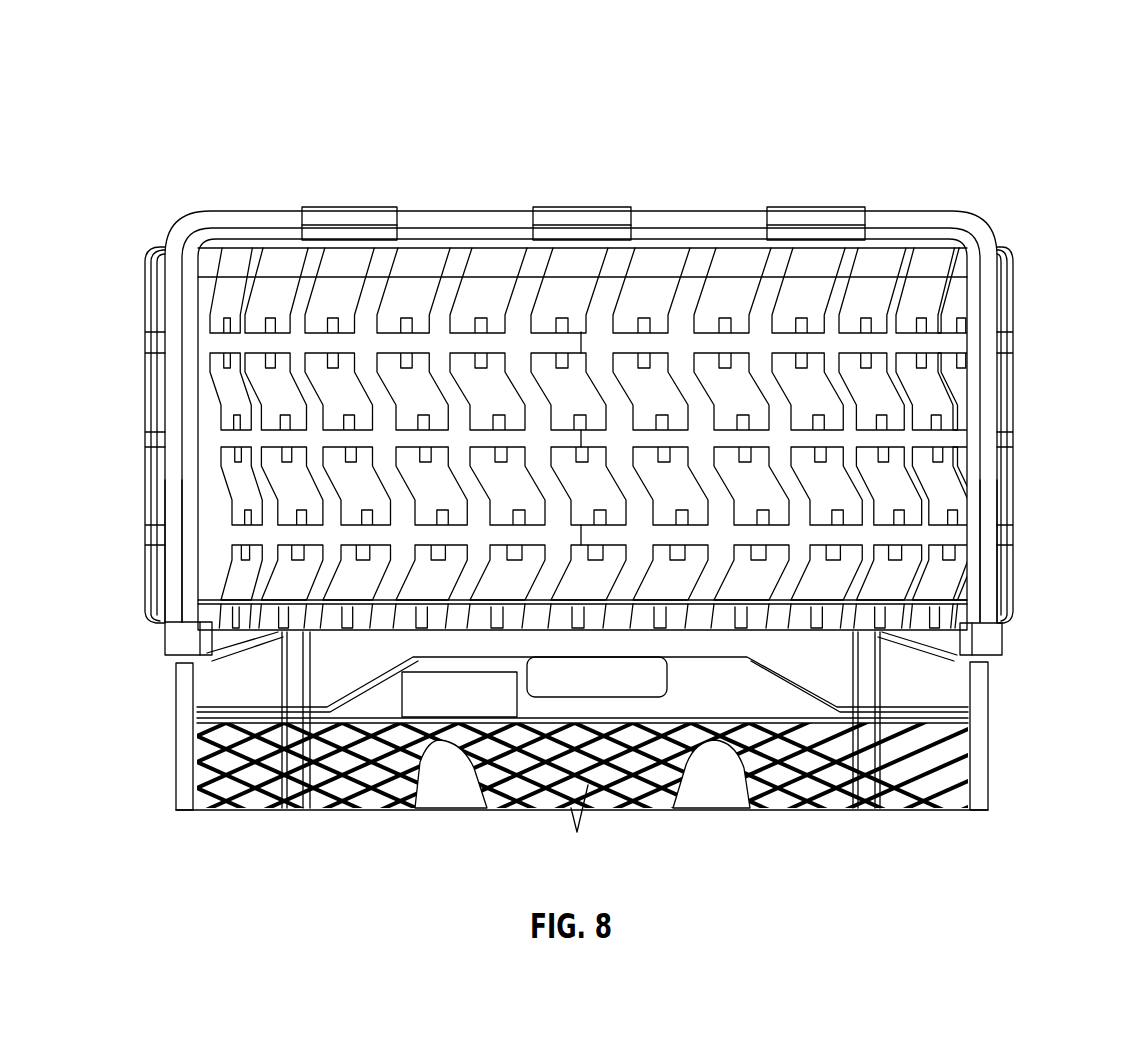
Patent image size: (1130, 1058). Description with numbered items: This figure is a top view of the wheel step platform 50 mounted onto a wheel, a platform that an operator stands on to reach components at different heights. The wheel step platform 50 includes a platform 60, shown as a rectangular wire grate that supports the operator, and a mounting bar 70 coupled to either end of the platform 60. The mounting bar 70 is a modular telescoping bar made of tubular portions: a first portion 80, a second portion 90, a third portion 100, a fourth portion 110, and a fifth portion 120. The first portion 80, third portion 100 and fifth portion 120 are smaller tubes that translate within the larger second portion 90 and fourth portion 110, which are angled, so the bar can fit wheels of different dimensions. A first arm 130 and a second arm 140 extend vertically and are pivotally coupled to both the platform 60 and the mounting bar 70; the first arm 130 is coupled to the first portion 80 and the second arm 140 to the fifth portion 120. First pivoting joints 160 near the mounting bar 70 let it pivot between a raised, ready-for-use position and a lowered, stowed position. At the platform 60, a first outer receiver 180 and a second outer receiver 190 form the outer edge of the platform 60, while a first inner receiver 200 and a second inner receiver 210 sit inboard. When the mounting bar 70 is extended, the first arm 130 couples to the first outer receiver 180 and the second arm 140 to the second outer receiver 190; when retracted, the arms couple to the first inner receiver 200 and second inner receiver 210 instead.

The wheel step platform 50 is at (1037, 92).
The platform 60 is at (278, 792).
The mounting bar 70 is at (193, 231).
The first portion 80 is at (177, 585).
The second portion 90 is at (170, 287).
The third portion 100 is at (462, 222).
The fourth portion 110 is at (957, 222).
The fifth portion 120 is at (985, 587).
The first arm 130 is at (200, 663).
The second arm 140 is at (942, 652).
The first pivoting joints 160 is at (177, 638).
The first outer receiver 180 is at (185, 702).
The second outer receiver 190 is at (980, 680).
The first inner receiver 200 is at (292, 692).
The second inner receiver 210 is at (865, 688).